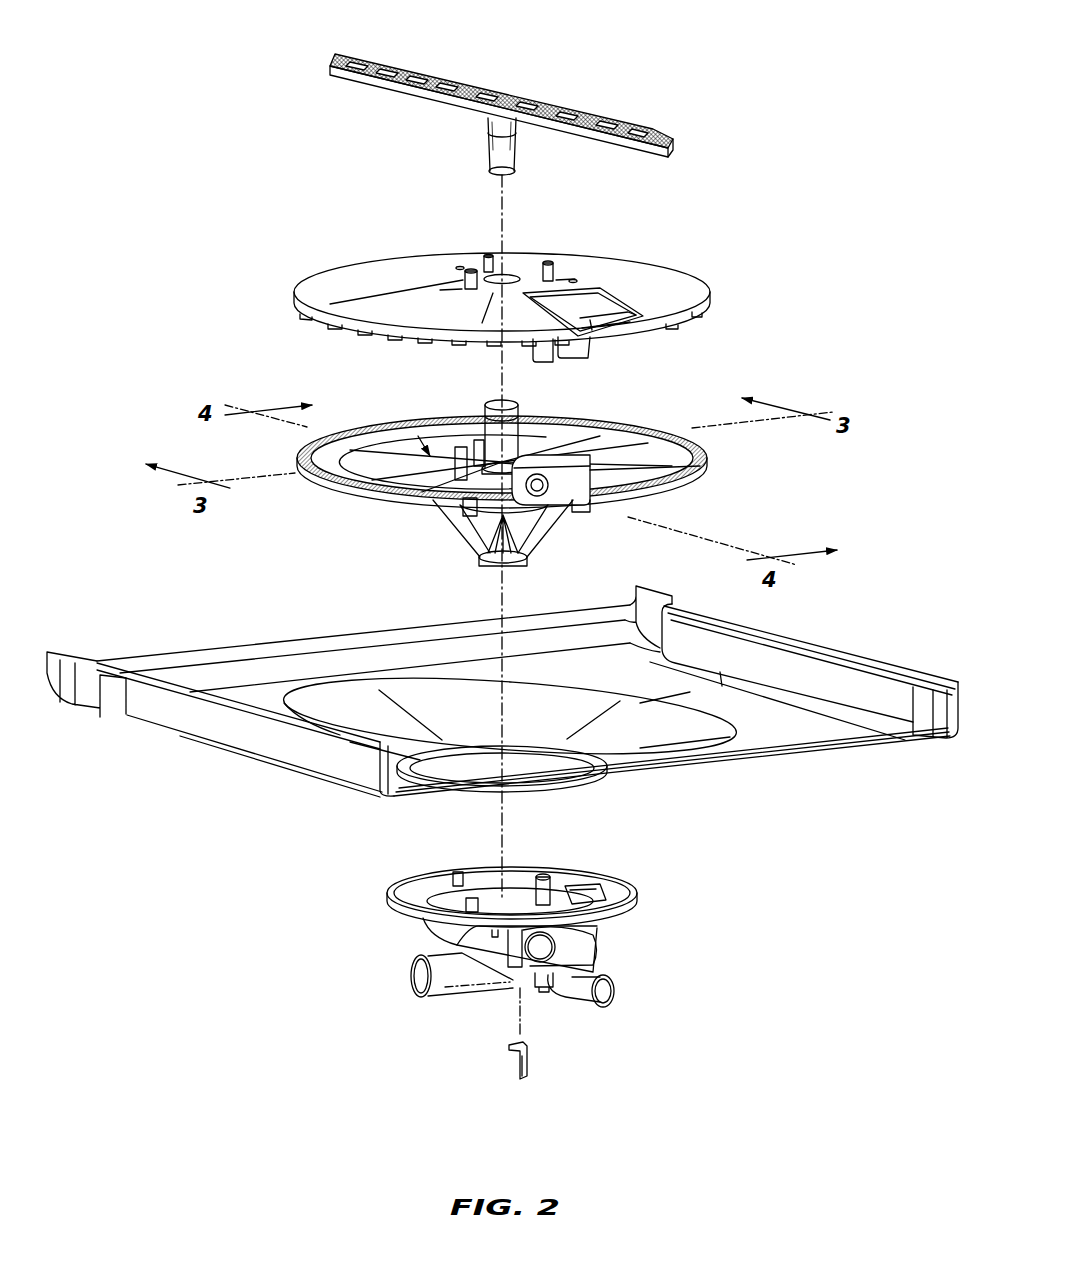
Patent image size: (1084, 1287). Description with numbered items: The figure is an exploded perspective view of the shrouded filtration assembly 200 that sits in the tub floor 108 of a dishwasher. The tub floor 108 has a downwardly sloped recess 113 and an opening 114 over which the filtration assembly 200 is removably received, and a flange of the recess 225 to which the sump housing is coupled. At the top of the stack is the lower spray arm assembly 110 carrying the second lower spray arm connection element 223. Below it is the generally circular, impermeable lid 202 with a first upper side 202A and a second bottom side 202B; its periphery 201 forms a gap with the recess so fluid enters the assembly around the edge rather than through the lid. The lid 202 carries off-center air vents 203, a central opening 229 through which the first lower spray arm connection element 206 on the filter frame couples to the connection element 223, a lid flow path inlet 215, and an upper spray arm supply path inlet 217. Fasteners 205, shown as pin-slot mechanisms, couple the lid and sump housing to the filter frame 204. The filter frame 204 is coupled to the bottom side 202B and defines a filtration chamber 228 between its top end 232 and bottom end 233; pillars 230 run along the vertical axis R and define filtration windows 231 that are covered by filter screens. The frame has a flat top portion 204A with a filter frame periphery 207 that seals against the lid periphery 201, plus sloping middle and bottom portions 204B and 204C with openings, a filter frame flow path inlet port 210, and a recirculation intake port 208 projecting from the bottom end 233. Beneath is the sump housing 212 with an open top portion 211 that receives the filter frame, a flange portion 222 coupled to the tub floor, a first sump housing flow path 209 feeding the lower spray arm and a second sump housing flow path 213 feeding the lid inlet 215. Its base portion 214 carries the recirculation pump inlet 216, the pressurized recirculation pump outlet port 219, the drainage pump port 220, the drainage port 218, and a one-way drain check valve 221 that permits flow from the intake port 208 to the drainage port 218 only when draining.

The lower spray arm assembly 110 is at (585, 110).
The second lower spray arm connection element 223 is at (515, 152).
The filtration assembly 200 is at (712, 250).
The lid 202 is at (520, 516).
The first (upper) side 202A is at (428, 268).
The second (bottom) side 202B is at (352, 330).
The periphery 201 is at (712, 312).
The air vents 203 is at (484, 258).
The fasteners 205 is at (463, 295).
The opening 229 is at (508, 276).
The upper spray arm supply path inlet 217 is at (638, 334).
The lid flow path inlet 215 is at (560, 352).
The filter frame 204 is at (708, 460).
The top portion 204A is at (345, 440).
The middle portion 204B is at (585, 476).
The bottom portion 204C is at (462, 522).
The first lower spray arm connection element 206 is at (508, 408).
The filter frame periphery 207 is at (328, 492).
The filtration chamber 228 is at (382, 460).
The filtration windows 231 is at (386, 497).
The filter frame flow path inlet port 210 is at (545, 498).
The pillars 230 is at (660, 476).
The recirculation intake port 208 is at (487, 564).
The top end 232 is at (662, 434).
The bottom end 233 is at (522, 562).
The vertical axis R is at (506, 616).
The tub floor 108 is at (502, 707).
The recess 113 is at (548, 722).
The opening 114 is at (596, 780).
The flange of the recess 225 is at (367, 708).
The sump housing 212 is at (657, 893).
The flange portion 222 is at (402, 882).
The second sump housing flow path 213 is at (622, 906).
The base portion 214 is at (458, 946).
The first sump housing flow path 209 is at (541, 872).
The open top portion 211 is at (592, 872).
The drainage pump port 220 is at (604, 957).
The recirculation pump inlet 216 is at (410, 980).
The drainage port 218 is at (618, 996).
The recirculation pump outlet port 219 is at (528, 980).
The drain check valve 221 is at (519, 1080).